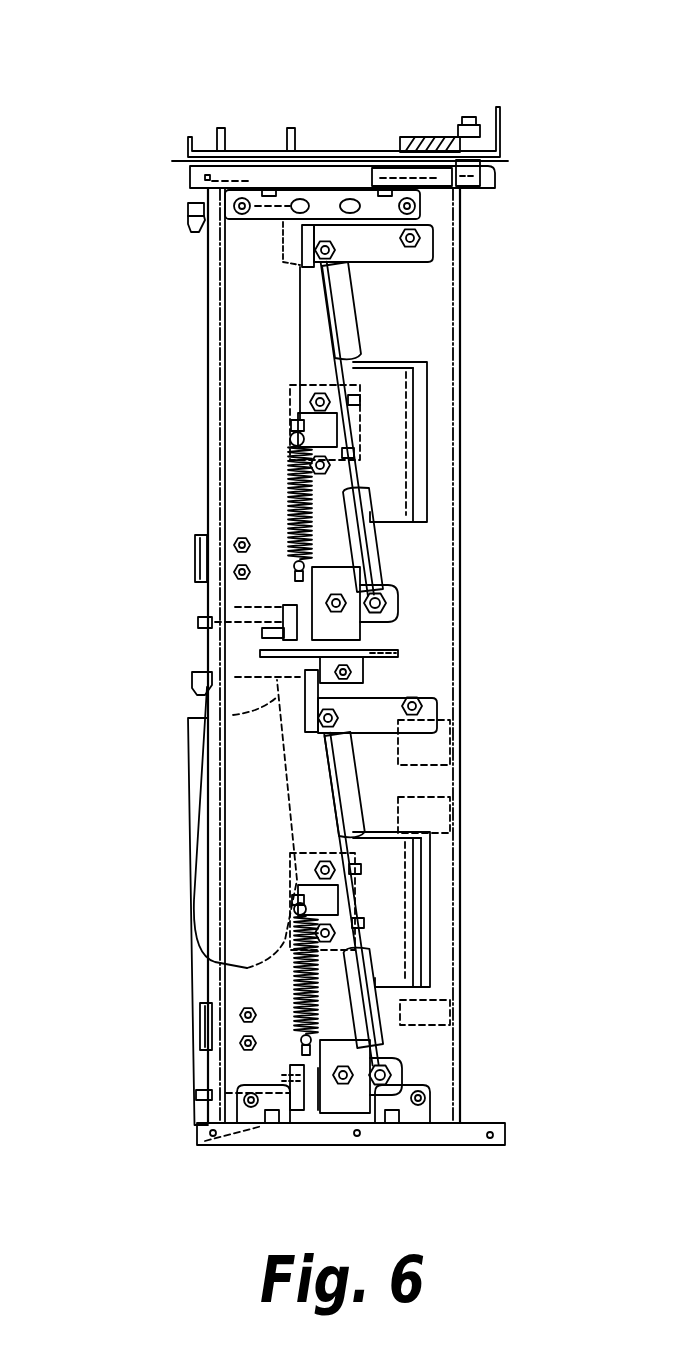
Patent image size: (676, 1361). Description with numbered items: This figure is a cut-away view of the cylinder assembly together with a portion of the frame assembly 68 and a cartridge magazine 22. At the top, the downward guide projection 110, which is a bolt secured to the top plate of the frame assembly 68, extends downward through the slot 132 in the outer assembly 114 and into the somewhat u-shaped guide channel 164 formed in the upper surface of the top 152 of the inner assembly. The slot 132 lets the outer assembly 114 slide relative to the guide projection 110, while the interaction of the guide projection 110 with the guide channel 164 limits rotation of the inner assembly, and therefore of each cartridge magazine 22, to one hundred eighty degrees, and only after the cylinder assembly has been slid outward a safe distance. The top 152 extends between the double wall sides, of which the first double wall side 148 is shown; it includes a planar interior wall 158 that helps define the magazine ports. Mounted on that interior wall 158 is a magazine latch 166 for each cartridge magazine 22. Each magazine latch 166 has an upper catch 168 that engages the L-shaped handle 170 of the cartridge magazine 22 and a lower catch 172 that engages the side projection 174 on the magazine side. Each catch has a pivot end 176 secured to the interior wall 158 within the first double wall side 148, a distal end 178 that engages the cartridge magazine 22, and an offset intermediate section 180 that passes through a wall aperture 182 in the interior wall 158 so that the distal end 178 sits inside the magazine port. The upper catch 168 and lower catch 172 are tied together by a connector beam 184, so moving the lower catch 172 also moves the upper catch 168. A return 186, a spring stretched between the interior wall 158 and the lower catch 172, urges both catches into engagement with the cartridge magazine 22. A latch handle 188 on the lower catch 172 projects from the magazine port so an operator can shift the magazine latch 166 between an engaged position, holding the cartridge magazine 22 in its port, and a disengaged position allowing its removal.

The cartridge magazine 22 is at (190, 786).
The frame assembly 68 is at (252, 135).
The downward guide projection 110 is at (472, 160).
The outer assembly 114 is at (200, 168).
The slot 132 is at (446, 155).
The first double wall side 148 is at (432, 604).
The top 152 is at (311, 230).
The interior wall 158 is at (413, 303).
The guide channel 164 is at (387, 172).
The magazine latch 166 is at (292, 274).
The upper catch 168 is at (197, 223).
The handle 170 is at (205, 755).
The lower catch 172 is at (285, 612).
The side projection 174 is at (288, 1082).
The pivot end 176 is at (432, 238).
The distal end 178 is at (190, 209).
The offset intermediate section 180 is at (302, 215).
The wall aperture 182 is at (290, 652).
The connector beam 184 is at (368, 497).
The return 186 is at (290, 492).
The latch handle 188 is at (268, 622).